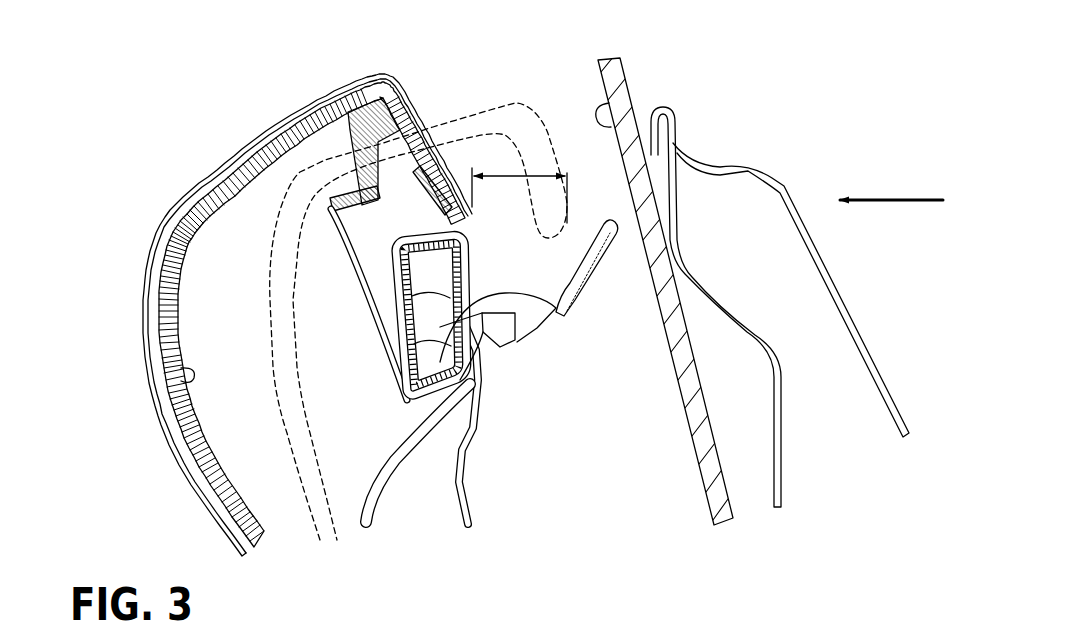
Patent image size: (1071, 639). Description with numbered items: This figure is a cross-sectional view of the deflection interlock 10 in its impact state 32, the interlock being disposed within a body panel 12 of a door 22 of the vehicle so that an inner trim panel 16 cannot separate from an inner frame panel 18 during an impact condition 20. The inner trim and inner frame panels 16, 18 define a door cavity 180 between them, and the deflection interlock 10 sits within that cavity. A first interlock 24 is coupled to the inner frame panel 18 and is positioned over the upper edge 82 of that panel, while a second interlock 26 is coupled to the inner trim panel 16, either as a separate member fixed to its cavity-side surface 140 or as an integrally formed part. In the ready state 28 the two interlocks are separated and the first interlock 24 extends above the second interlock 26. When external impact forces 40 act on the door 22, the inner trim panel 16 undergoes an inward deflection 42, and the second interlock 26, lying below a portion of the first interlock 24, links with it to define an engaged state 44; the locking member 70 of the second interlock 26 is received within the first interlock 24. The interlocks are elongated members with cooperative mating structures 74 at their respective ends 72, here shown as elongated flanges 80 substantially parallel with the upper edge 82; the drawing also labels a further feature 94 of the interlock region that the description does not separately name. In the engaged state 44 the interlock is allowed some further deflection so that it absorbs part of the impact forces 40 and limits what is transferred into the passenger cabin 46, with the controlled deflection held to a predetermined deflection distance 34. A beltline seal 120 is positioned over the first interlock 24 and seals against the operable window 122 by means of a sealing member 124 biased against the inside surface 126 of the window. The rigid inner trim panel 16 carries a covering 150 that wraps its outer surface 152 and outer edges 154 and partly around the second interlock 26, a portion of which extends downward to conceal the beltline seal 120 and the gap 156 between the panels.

The deflection interlock 10 is at (262, 252).
The body panel 12 is at (847, 241).
The inner trim panel 16 is at (152, 417).
The inner frame panel 18 is at (392, 462).
The impact condition 20 is at (818, 107).
The door 22 is at (706, 100).
The first interlock 24 is at (362, 305).
The second interlock 26 is at (378, 108).
The ready state 28 is at (376, 379).
The impact state 32 is at (250, 278).
The deflection distance 34 is at (512, 177).
The external impact forces 40 is at (880, 197).
The inward deflection 42 is at (433, 88).
The engaged state 44 is at (176, 222).
The passenger cabin 46 is at (90, 340).
The locking member 70 is at (330, 204).
The ends 72 is at (362, 196).
The cooperative mating structures 74 is at (325, 158).
The elongated flanges 80 is at (364, 294).
The upper edge 82 is at (548, 330).
The edge flange 94 is at (413, 100).
The beltline seal 120 is at (517, 350).
The operable window 122 is at (616, 74).
The sealing member 124 is at (603, 252).
The inside surface 126 is at (612, 110).
The cavity-side surface 140 is at (157, 383).
The covering 150 is at (178, 195).
The outer surface 152 is at (197, 470).
The outer edges 154 is at (517, 160).
The gap 156 is at (473, 210).
The door cavity 180 is at (280, 481).